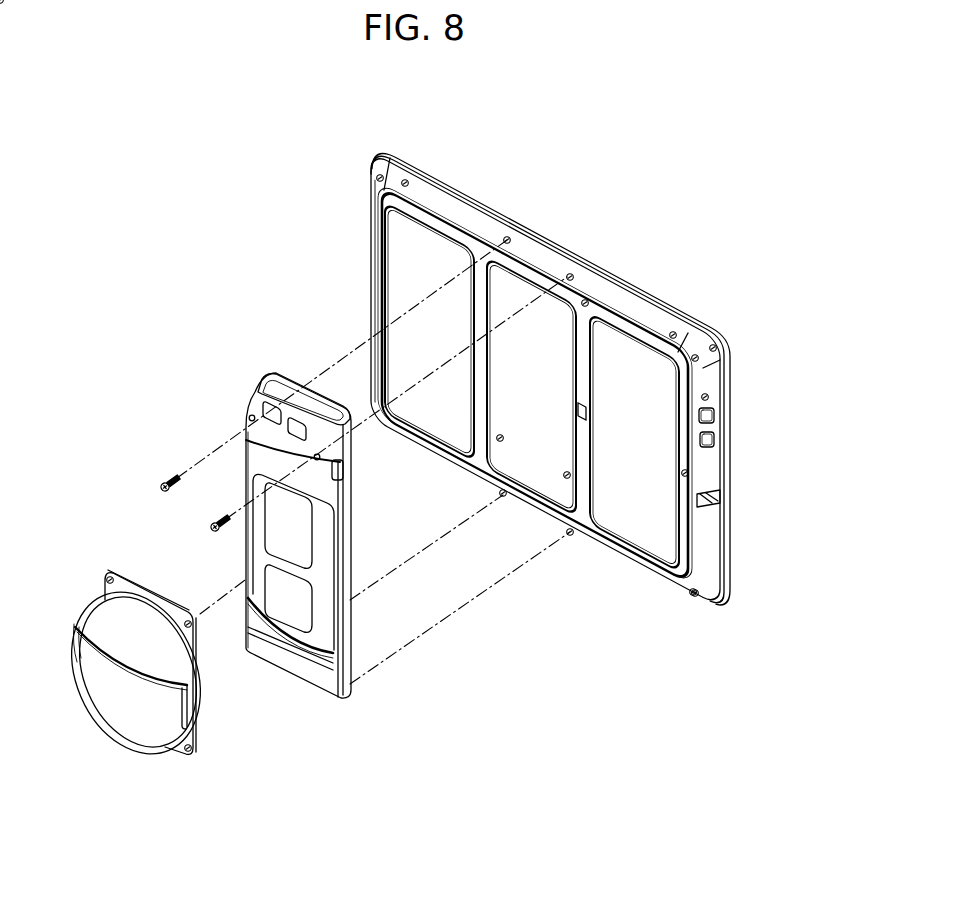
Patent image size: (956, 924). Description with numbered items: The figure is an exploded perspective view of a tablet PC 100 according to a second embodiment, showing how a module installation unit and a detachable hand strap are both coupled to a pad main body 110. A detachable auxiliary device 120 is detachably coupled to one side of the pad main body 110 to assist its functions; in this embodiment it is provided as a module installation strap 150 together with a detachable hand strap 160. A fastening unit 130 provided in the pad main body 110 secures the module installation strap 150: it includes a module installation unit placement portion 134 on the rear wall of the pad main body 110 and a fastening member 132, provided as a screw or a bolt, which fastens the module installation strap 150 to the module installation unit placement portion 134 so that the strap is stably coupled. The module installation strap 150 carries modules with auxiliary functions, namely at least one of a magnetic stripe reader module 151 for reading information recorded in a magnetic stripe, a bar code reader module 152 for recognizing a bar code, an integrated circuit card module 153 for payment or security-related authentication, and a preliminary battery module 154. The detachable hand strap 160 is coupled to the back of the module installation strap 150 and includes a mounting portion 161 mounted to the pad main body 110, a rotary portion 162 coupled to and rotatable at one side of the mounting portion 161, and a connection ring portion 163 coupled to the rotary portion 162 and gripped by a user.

The tablet PC 100 is at (200, 172).
The pad main body 110 is at (696, 235).
The detachable auxiliary device 120 is at (472, 535).
The fastening unit 130 is at (108, 410).
The fastening member 132 is at (158, 484).
The module installation unit placement portion 134 is at (512, 292).
The module installation strap 150 is at (588, 597).
The magnetic stripe reader module 151 is at (300, 428).
The bar code reader module 152 is at (353, 413).
The integrated circuit (IC) card module 153 is at (293, 543).
The preliminary battery module 154 is at (300, 617).
The detachable hand strap 160 is at (288, 700).
The mounting portion 161 is at (183, 637).
The rotary portion 162 is at (147, 741).
The connection ring portion 163 is at (163, 714).